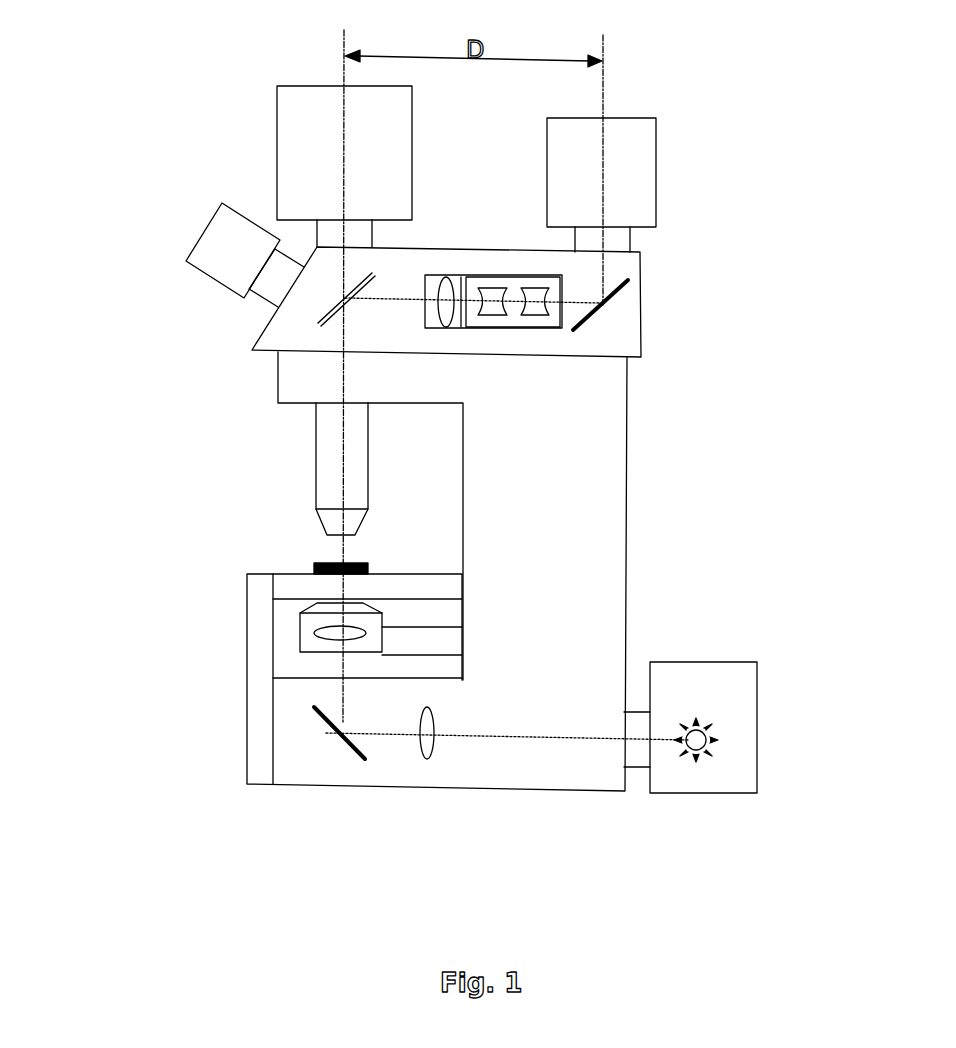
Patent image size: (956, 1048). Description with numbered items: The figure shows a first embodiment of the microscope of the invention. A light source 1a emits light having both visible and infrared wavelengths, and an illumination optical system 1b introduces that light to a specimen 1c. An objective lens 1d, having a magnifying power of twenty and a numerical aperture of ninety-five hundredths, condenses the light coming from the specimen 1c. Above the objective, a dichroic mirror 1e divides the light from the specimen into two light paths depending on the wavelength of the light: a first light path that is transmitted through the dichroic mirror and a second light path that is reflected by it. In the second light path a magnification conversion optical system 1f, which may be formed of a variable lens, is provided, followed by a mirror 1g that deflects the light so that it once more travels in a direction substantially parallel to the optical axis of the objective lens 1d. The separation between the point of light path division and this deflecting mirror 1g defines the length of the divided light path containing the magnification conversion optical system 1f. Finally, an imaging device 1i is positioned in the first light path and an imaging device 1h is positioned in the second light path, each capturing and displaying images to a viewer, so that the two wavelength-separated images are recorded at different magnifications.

The light source 1a is at (702, 768).
The illumination optical system 1b is at (422, 752).
The specimen 1c is at (314, 563).
The objective lens 1d is at (315, 457).
The dichroic mirror 1e is at (318, 320).
The magnification conversion optical system 1f is at (492, 278).
The mirror 1g is at (601, 305).
The imaging device 1h is at (638, 150).
The imaging device 1i is at (292, 137).